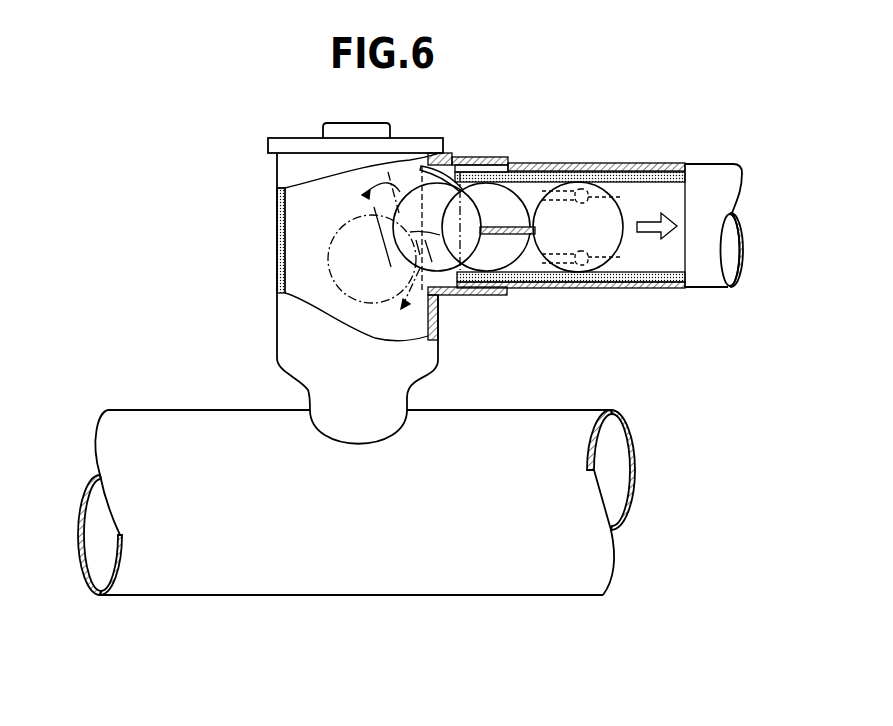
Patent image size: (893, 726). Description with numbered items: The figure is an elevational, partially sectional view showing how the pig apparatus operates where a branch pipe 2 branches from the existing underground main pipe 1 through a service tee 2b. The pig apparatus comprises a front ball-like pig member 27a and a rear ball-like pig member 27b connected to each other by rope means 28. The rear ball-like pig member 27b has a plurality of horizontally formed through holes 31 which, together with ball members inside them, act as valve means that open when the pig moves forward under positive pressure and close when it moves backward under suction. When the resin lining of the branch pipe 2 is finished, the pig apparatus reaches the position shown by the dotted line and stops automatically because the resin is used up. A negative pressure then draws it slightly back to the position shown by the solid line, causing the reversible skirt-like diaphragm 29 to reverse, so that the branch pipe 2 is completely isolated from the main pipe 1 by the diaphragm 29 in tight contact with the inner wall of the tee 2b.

The main pipe 1 is at (142, 423).
The branch pipe 2 is at (649, 165).
The service tee 2b is at (277, 240).
The front ball-like pig member 27a is at (343, 240).
The rear ball-like pig member 27b is at (505, 200).
The rope means 28 is at (500, 262).
The reversible skirt-like diaphragm 29 is at (457, 188).
The through holes 31 is at (594, 254).